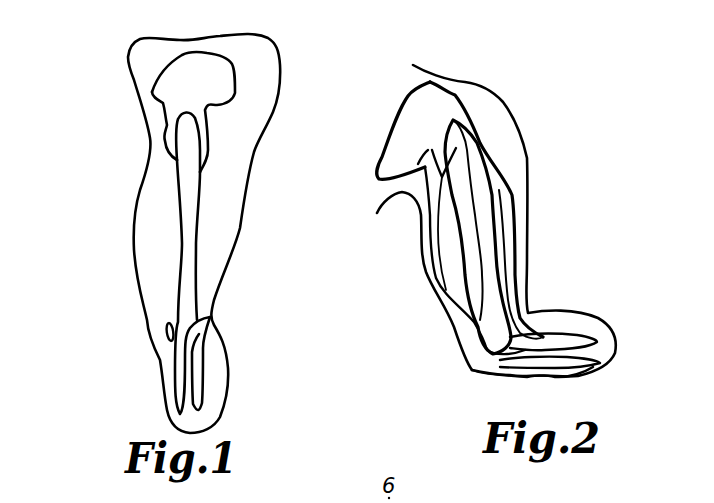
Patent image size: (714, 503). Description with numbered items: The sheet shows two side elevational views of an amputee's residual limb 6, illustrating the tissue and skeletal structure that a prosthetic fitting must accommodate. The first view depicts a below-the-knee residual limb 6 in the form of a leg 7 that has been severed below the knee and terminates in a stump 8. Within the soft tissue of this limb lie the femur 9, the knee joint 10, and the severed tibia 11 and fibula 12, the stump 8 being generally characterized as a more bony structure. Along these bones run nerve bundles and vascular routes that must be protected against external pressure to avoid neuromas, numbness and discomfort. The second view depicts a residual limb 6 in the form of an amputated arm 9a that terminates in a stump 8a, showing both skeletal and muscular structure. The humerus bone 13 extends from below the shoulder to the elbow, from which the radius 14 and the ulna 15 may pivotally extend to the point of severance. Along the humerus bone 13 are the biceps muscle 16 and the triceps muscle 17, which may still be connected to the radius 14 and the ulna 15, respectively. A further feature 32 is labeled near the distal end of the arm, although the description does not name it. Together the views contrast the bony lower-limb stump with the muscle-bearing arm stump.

In FIG. 1, the residual limb 6 is at (93, 144).
In FIG. 2, the residual limb 6 is at (555, 168).
In FIG. 1, the leg 7 is at (204, 233).
In FIG. 1, the stump 8 is at (213, 423).
In FIG. 2, the stump 8a is at (613, 347).
In FIG. 1, the femur 9 is at (200, 183).
In FIG. 2, the arm 9a is at (527, 157).
In FIG. 1, the knee joint 10 is at (210, 317).
In FIG. 1, the severed tibia 11 is at (178, 383).
In FIG. 1, the severed fibula 12 is at (207, 357).
In FIG. 2, the humerus bone 13 is at (493, 300).
In FIG. 2, the radius 14 is at (530, 353).
In FIG. 2, the ulna 15 is at (567, 333).
In FIG. 2, the biceps muscle 16 is at (517, 208).
In FIG. 2, the triceps muscle 17 is at (445, 249).
In FIG. 2, the apical foramen region 32 is at (463, 370).